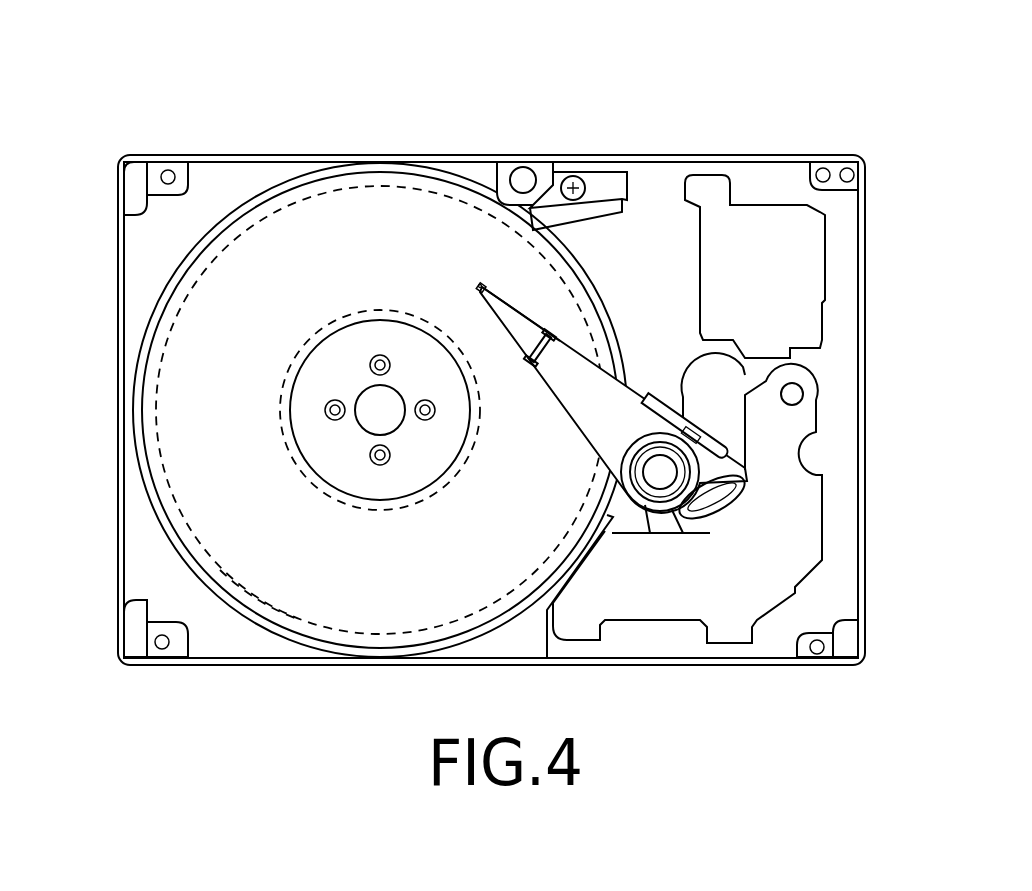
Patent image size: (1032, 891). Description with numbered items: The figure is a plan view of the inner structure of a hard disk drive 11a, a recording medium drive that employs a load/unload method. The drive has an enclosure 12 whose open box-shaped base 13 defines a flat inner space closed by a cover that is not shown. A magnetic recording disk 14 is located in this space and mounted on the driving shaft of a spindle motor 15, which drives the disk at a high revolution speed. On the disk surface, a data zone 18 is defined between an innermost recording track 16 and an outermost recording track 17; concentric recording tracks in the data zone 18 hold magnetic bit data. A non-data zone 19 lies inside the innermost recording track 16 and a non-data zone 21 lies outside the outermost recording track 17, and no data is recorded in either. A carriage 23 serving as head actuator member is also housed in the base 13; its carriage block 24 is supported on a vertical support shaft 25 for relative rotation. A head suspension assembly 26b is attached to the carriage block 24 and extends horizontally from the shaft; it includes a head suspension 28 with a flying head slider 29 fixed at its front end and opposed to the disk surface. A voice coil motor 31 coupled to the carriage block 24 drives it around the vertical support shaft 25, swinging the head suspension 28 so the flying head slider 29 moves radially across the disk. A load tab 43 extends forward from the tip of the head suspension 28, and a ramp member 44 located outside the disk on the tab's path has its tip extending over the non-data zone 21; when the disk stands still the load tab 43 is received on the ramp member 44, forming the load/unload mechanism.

The hard disk drive 11a is at (282, 135).
The enclosure 12 is at (670, 152).
The base 13 is at (120, 243).
The magnetic recording disk 14 is at (149, 322).
The spindle motor 15 is at (360, 427).
The innermost recording track 16 is at (281, 396).
The outermost recording track 17 is at (153, 402).
The data zone 18 is at (255, 496).
The non-data zone 19 is at (360, 506).
The non-data zone 21 is at (265, 607).
The carriage 23 is at (680, 512).
The carriage block 24 is at (633, 502).
The vertical support shaft 25 is at (684, 483).
The head suspension assembly 26b is at (575, 447).
The head suspension 28 is at (507, 303).
The flying head slider 29 is at (477, 289).
The voice coil motor 31 is at (878, 548).
The load tab 43 is at (476, 272).
The ramp member 44 is at (595, 172).